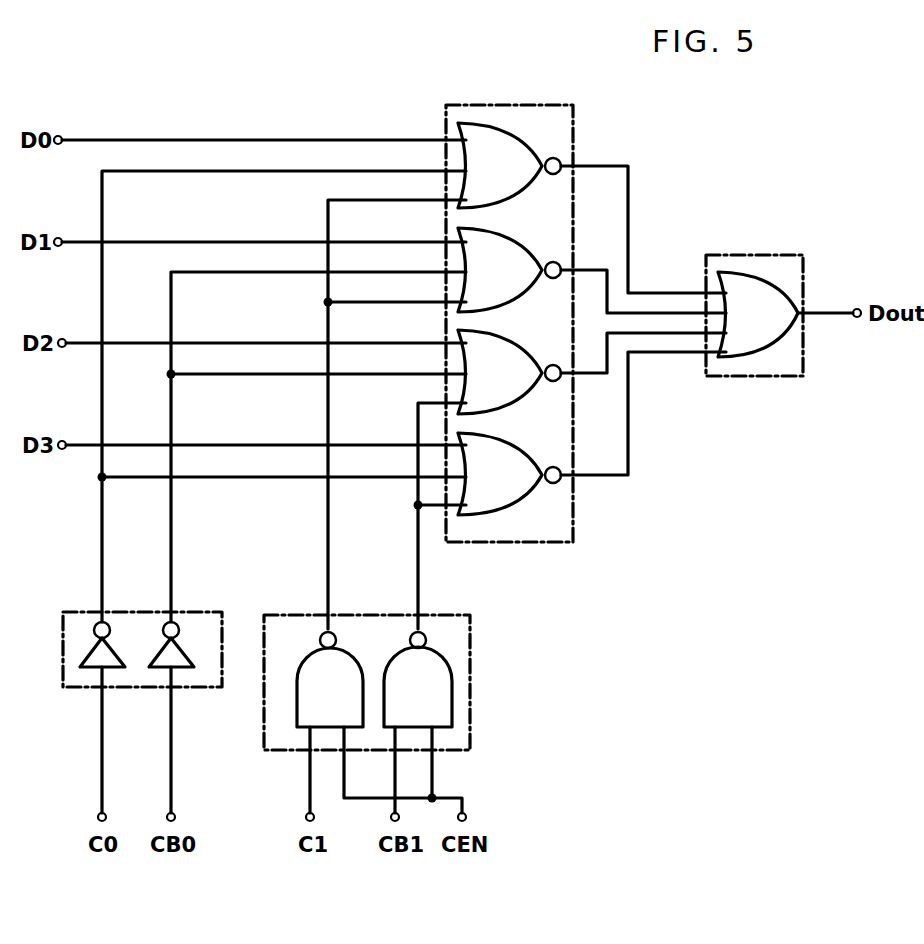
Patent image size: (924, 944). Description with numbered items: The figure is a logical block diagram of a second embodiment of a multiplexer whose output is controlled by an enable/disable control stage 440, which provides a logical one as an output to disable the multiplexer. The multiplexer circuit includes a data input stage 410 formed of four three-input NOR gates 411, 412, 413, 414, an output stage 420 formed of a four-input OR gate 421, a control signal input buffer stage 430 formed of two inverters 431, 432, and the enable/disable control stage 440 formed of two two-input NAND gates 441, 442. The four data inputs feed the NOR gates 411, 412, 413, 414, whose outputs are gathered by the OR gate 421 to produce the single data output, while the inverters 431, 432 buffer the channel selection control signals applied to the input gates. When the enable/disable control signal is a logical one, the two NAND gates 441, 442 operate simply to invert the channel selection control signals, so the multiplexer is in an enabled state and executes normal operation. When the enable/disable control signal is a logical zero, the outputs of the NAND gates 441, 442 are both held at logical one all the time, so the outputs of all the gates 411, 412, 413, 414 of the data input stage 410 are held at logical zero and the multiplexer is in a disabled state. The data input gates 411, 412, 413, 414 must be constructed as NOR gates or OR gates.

The data input stage 410 is at (573, 125).
The three-input NOR gate 411 is at (509, 165).
The three-input NOR gate 412 is at (509, 270).
The three-input NOR gate 413 is at (509, 372).
The three-input NOR gate 414 is at (509, 474).
The output stage 420 is at (770, 376).
The four-input OR gate 421 is at (758, 314).
The control signal input buffer stage 430 is at (148, 612).
The inverter 431 is at (117, 652).
The inverter 432 is at (186, 655).
The enable/disable control stage 440 is at (355, 615).
The two-input NAND gate 441 is at (330, 679).
The two-input NAND gate 442 is at (418, 679).